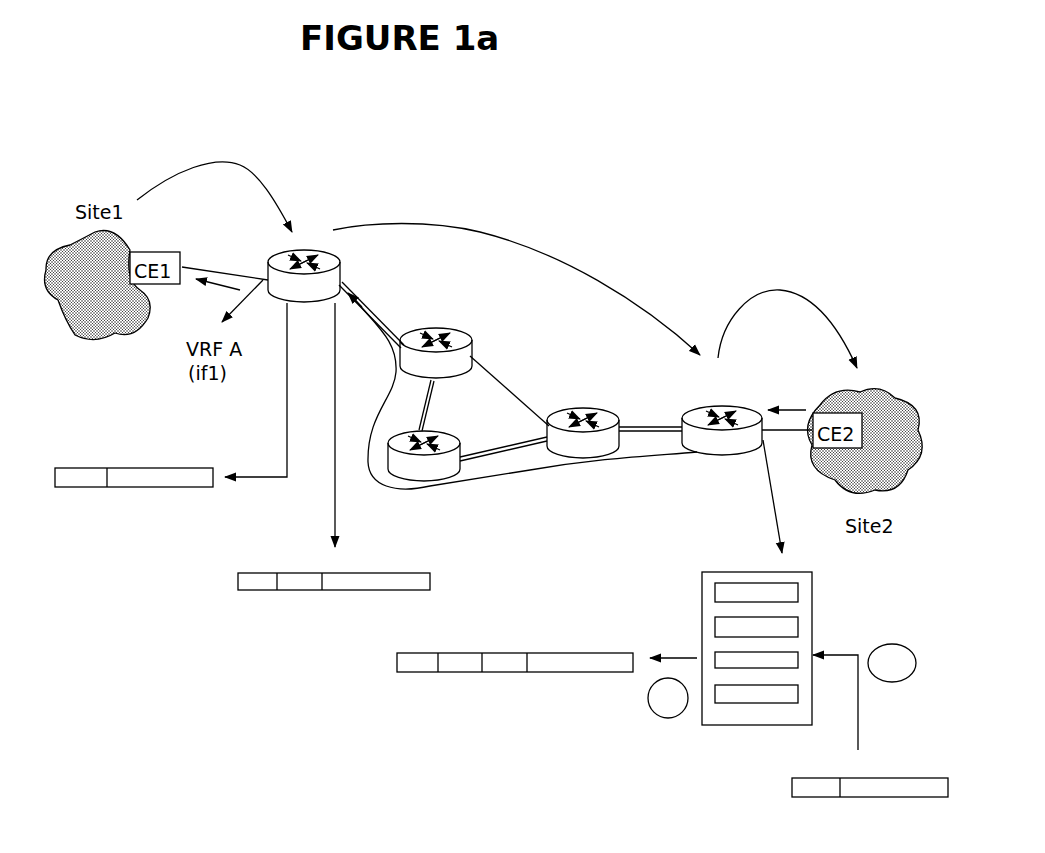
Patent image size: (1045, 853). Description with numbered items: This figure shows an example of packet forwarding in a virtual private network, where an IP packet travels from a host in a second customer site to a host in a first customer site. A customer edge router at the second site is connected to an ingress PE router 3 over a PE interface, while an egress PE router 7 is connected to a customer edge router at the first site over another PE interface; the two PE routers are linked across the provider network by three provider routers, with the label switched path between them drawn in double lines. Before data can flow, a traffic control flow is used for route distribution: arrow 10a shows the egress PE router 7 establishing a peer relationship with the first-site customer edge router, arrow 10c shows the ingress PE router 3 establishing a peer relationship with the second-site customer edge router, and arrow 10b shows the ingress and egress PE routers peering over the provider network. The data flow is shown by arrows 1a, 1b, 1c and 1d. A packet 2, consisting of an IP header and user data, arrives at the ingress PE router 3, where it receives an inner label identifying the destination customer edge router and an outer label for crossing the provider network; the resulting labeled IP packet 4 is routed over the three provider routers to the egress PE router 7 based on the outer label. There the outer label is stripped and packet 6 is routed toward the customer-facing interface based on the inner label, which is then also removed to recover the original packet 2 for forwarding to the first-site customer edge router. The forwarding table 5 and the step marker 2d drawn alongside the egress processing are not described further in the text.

The peer relationship arrow 10a is at (221, 164).
The PE-PE peer relationship arrow 10b is at (612, 290).
The ingress PE-CE2 peer relationship arrow 10c is at (773, 289).
The egress PE router 7 is at (278, 250).
The data flow arrow 1a is at (784, 402).
The data flow arrow 1b is at (530, 478).
The data flow arrow 1c is at (246, 477).
The data flow arrow 1d is at (220, 284).
The packet 2 is at (147, 488).
The ingress PE router 3 is at (700, 455).
The IP packet with inner and outer labels 4 is at (526, 672).
The forwarding table 5 is at (740, 718).
The packet 6 is at (318, 590).
The lookup step 2d is at (672, 688).